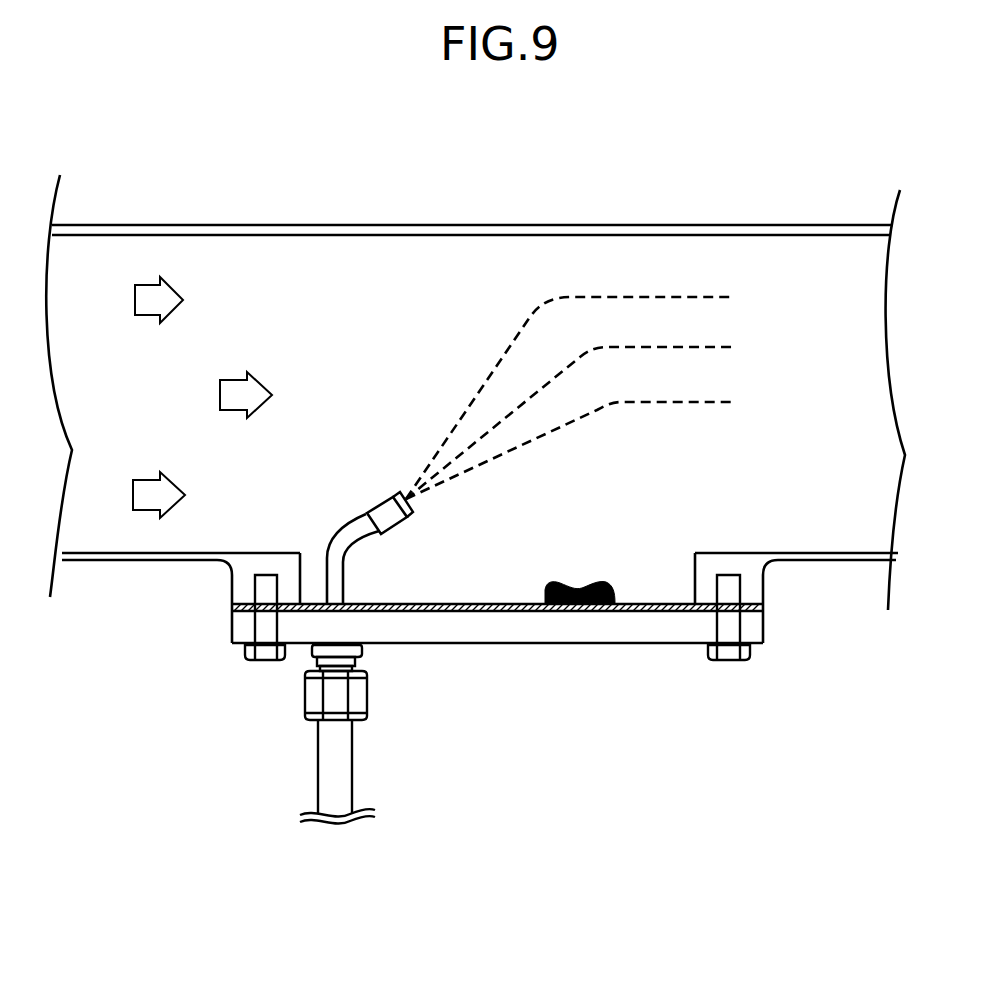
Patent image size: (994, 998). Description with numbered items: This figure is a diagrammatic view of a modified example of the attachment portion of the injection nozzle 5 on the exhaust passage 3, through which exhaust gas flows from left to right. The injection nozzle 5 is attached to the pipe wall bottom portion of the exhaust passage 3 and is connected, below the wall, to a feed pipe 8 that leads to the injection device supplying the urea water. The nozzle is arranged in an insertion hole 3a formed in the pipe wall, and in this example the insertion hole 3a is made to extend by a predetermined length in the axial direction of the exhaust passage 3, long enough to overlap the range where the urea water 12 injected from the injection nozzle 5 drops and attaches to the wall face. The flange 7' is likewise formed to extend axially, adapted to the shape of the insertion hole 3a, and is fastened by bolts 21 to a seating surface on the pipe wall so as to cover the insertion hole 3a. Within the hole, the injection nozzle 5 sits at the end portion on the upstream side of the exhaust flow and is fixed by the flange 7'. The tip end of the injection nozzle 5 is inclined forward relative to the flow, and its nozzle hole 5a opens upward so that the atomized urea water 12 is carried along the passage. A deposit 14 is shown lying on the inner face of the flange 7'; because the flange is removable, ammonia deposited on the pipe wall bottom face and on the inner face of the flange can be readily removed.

The exhaust passage 3 is at (237, 224).
The insertion hole 3a is at (440, 583).
The injection nozzle 5 is at (370, 508).
The nozzle hole 5a is at (400, 494).
The flange 7' is at (461, 598).
The feed pipe 8 is at (318, 770).
The urea water 12 is at (499, 453).
The deposit 14 is at (600, 582).
The bolts 21 is at (260, 662).